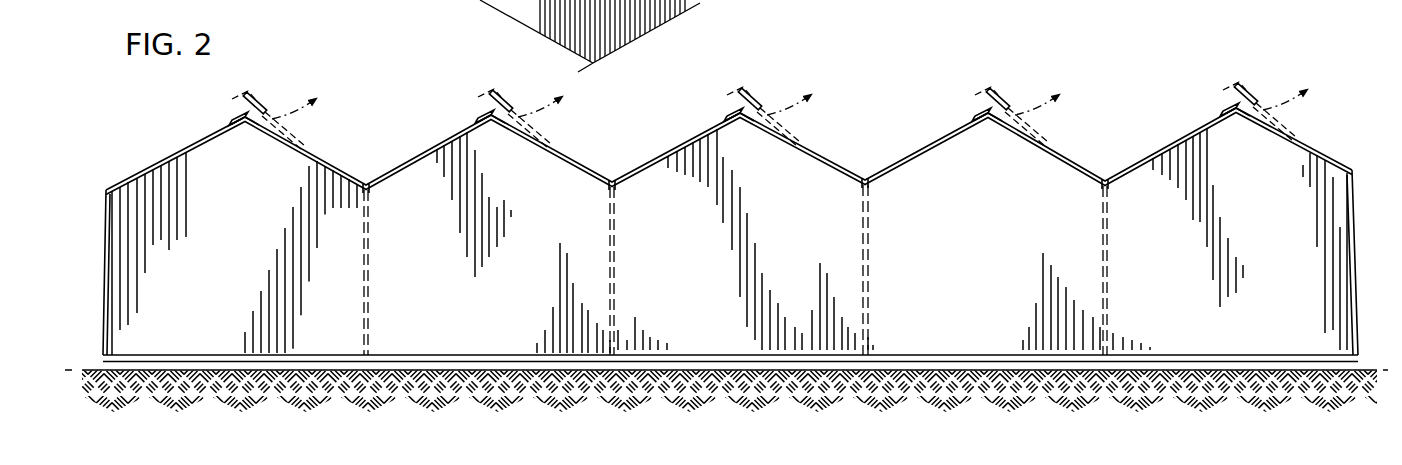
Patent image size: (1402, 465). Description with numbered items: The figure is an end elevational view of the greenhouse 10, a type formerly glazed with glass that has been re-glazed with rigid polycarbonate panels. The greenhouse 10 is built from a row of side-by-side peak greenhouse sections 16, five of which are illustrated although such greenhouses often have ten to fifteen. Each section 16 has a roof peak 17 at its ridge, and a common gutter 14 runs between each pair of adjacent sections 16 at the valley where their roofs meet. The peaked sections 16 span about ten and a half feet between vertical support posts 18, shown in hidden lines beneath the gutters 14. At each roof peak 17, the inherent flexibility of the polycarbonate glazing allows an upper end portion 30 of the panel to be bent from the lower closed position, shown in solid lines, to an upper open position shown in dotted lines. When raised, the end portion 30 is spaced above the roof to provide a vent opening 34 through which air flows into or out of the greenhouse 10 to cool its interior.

The greenhouse 10 is at (1128, 50).
The common gutter 14 is at (366, 182).
The peak greenhouse section 16 is at (157, 146).
The roof peak 17 is at (236, 114).
The vertical support post 18 is at (1150, 279).
The upper end portion 30 is at (275, 108).
The vent opening 34 is at (478, 107).